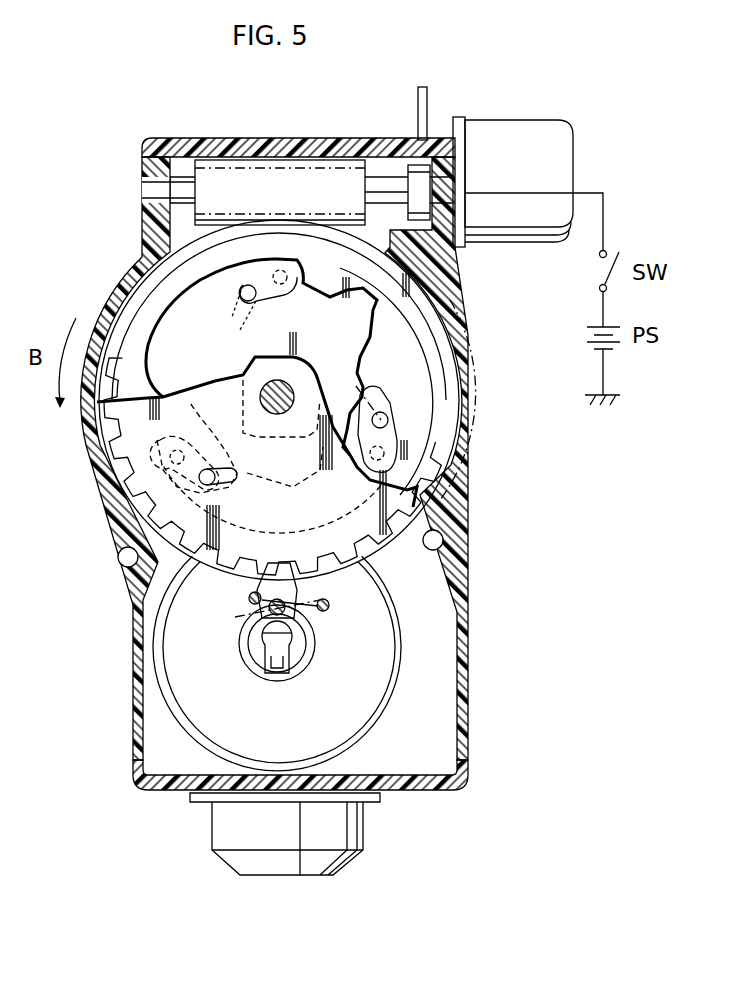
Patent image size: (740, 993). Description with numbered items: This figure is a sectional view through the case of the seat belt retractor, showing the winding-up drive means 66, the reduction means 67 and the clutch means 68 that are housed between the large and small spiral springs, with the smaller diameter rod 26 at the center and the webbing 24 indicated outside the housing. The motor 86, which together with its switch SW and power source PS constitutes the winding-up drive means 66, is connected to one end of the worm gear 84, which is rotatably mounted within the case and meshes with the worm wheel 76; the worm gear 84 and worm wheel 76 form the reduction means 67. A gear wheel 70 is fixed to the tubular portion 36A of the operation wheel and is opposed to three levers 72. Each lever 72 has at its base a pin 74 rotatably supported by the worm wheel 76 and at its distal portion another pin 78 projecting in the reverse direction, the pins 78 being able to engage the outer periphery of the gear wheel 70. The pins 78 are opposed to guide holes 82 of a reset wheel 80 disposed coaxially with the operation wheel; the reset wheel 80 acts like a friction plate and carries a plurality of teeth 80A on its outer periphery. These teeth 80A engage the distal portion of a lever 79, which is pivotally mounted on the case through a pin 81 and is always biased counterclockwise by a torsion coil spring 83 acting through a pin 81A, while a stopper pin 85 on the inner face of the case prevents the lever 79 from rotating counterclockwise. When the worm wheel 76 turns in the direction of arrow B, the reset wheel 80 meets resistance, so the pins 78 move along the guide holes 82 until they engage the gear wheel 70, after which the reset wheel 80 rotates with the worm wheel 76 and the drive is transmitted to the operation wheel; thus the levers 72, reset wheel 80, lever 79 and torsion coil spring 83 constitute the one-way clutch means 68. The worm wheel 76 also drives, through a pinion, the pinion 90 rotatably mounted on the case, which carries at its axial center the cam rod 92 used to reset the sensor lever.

The webbing 24 is at (428, 100).
The smaller diameter rod 26 is at (277, 383).
The tubular portion 36A is at (303, 407).
The winding-up drive means 66 is at (535, 117).
The reduction means 67 is at (183, 226).
The clutch means 68 is at (416, 351).
The gear wheel 70 is at (357, 352).
The lever 72 is at (298, 292).
The pin 74 is at (288, 276).
The worm wheel 76 is at (418, 455).
The pin 78 is at (244, 291).
The lever 79 is at (263, 566).
The reset wheel 80 is at (140, 490).
The teeth 80A is at (212, 568).
The pin 81 is at (241, 651).
The pin 81A is at (326, 612).
The guide hole 82 is at (232, 315).
The torsion coil spring 83 is at (312, 600).
The worm gear 84 is at (240, 160).
The stopper pin 85 is at (251, 603).
The motor 86 is at (563, 157).
The pinion 90 is at (400, 630).
The cam rod 92 is at (288, 643).